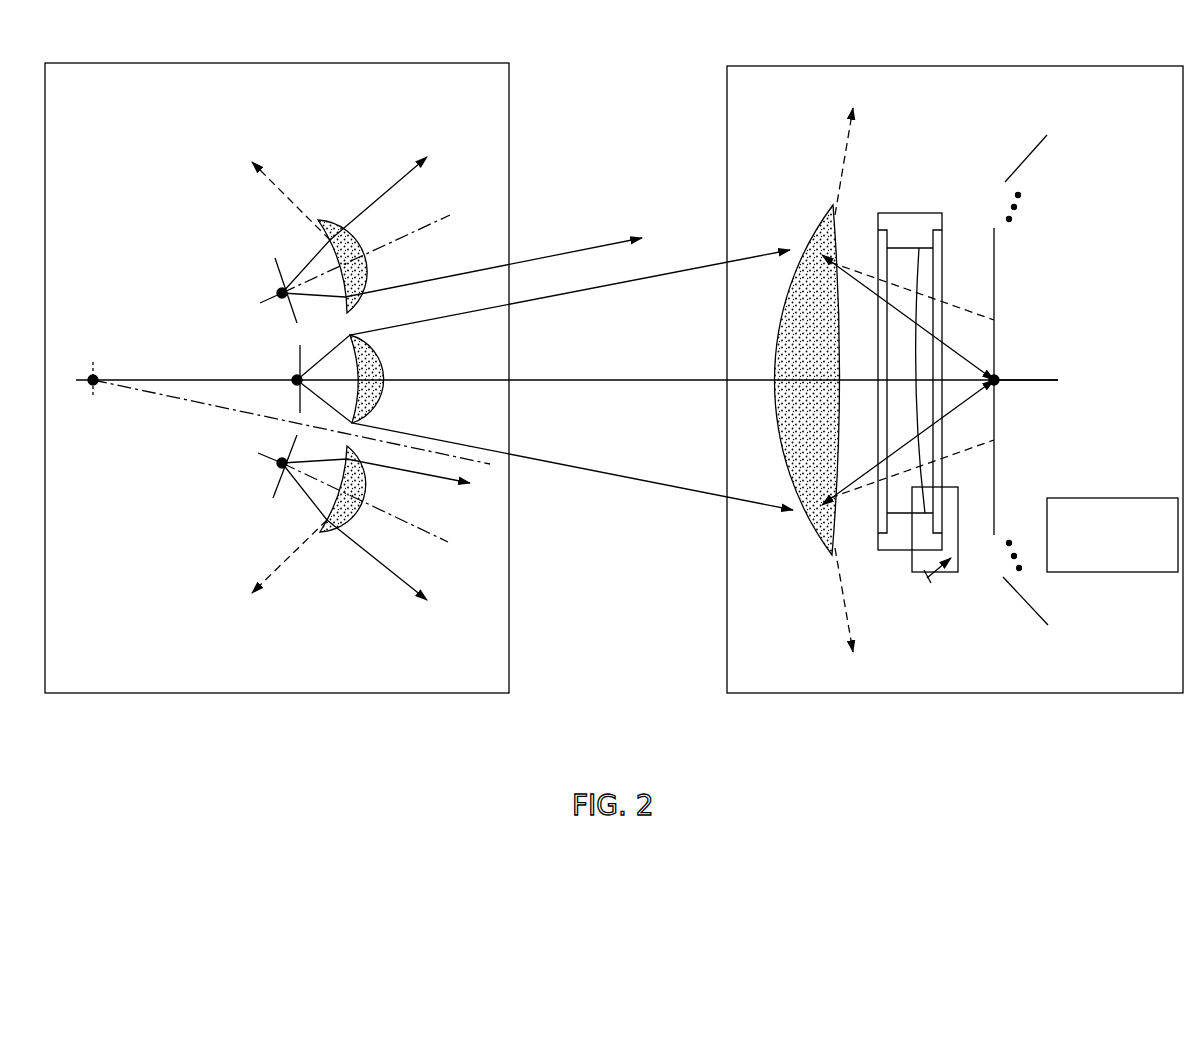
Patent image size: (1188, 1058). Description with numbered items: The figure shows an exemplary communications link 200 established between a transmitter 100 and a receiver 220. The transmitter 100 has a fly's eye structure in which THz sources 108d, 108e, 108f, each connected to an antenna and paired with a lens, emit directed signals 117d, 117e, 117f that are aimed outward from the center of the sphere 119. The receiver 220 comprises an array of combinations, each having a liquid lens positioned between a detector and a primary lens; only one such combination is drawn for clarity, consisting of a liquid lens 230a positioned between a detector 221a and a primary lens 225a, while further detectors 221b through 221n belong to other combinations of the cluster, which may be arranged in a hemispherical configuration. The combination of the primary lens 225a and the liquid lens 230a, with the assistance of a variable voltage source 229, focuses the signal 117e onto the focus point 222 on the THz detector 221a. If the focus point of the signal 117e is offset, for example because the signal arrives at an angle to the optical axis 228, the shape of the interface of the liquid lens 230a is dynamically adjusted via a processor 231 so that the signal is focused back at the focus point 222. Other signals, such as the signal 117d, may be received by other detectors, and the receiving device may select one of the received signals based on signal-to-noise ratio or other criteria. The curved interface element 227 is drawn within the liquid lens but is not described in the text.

The transmitter 100 is at (310, 677).
The center of the sphere 119 is at (91, 386).
The THz source 108d is at (278, 288).
The THz source 108e is at (294, 374).
The THz source 108f is at (278, 470).
The signal 117d is at (523, 262).
The signal 117e is at (581, 296).
The signal 117f is at (417, 470).
The communications link 200 is at (614, 410).
The receiver 220 is at (1034, 683).
The primary lens 225a is at (835, 223).
The liquid lens membrane 227 is at (919, 250).
The variable voltage source 229 is at (948, 576).
The liquid lens 230a is at (895, 551).
The detector 221a is at (996, 248).
The detector 221b is at (1033, 155).
The detector 221n is at (1033, 608).
The optical axis 228 is at (1034, 380).
The focus point 222 is at (997, 387).
The processor 231 is at (1112, 535).